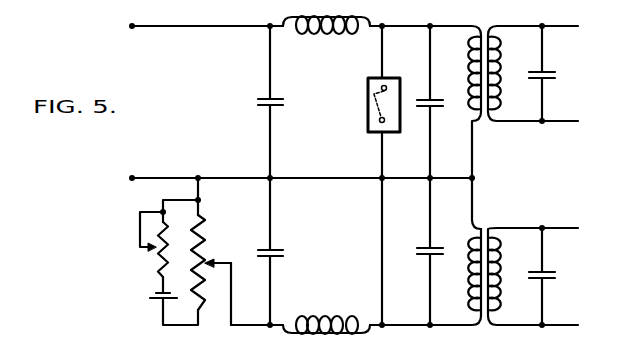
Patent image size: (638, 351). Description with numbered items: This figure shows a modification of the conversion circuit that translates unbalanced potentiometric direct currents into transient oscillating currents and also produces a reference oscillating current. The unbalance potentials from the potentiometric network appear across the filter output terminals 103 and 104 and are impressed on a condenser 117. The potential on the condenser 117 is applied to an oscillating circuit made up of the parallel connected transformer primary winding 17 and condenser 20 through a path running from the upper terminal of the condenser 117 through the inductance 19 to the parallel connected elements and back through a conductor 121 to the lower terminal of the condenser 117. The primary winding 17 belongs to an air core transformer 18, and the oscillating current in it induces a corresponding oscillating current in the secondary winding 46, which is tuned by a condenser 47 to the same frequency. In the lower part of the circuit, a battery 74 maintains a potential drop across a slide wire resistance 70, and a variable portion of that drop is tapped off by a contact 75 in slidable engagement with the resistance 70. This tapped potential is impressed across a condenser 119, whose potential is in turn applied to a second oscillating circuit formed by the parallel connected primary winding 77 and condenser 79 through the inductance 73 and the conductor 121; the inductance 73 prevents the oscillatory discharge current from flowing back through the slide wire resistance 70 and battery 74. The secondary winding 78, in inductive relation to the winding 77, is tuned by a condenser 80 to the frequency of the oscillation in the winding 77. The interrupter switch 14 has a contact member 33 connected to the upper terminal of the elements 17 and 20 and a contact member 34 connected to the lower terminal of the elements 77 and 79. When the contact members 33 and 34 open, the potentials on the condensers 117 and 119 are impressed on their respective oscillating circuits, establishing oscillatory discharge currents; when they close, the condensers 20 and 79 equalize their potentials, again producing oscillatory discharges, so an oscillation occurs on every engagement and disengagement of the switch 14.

The filter output terminal 103 is at (133, 30).
The filter output terminal 104 is at (134, 176).
The condenser 117 is at (258, 99).
The condenser 119 is at (282, 253).
The conductor 121 is at (340, 181).
The inductance 19 is at (325, 36).
The inductance 73 is at (327, 317).
The interrupter switch 14 is at (368, 88).
The contact member 33 is at (387, 84).
The contact member 34 is at (375, 108).
The condenser 20 is at (418, 100).
The condenser 79 is at (420, 250).
The primary winding 17 is at (466, 68).
The air core transformer 18 is at (489, 32).
The secondary winding 46 is at (505, 68).
The condenser 47 is at (556, 74).
The primary winding 77 is at (466, 296).
The secondary winding 78 is at (505, 270).
The condenser 80 is at (556, 276).
The slide wire resistance 70 is at (205, 229).
The contact 75 is at (207, 260).
The battery 74 is at (159, 296).